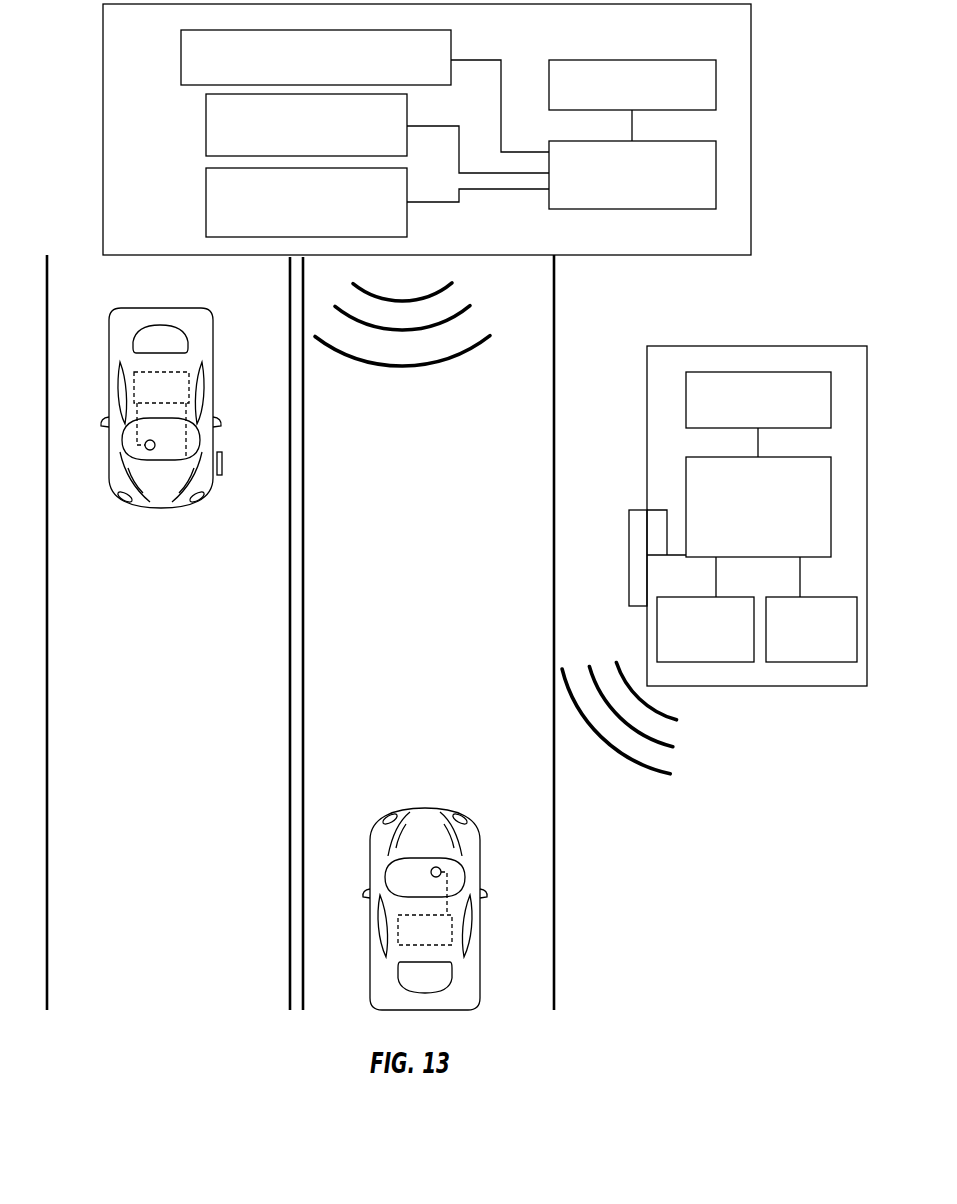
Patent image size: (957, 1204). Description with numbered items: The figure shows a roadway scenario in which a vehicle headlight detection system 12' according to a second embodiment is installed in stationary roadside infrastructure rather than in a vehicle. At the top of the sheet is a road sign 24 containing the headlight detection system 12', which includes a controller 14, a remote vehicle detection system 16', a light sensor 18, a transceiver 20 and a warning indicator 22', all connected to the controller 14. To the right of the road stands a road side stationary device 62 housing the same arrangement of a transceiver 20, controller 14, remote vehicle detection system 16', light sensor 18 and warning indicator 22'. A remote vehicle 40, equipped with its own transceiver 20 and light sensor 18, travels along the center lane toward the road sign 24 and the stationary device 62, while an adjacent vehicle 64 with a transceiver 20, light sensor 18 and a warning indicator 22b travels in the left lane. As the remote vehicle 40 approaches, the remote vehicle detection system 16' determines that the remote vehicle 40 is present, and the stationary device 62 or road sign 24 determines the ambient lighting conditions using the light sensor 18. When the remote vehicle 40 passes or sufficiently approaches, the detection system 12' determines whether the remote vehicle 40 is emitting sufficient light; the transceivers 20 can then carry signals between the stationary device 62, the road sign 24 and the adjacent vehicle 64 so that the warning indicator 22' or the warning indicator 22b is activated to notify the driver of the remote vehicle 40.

The road sign 24 is at (103, 128).
The warning indicator 22' is at (433, 312).
The vehicle headlight detection system 12' is at (332, 141).
The remote vehicle detection system 16' is at (452, 446).
The transceiver 20 is at (632, 60).
The controller 14 is at (632, 209).
The road side stationary device 62 is at (757, 346).
The light sensor 18 is at (810, 662).
The adjacent vehicle 64 is at (158, 508).
The warning indicator 22b is at (222, 462).
The remote vehicle 40 is at (445, 1010).